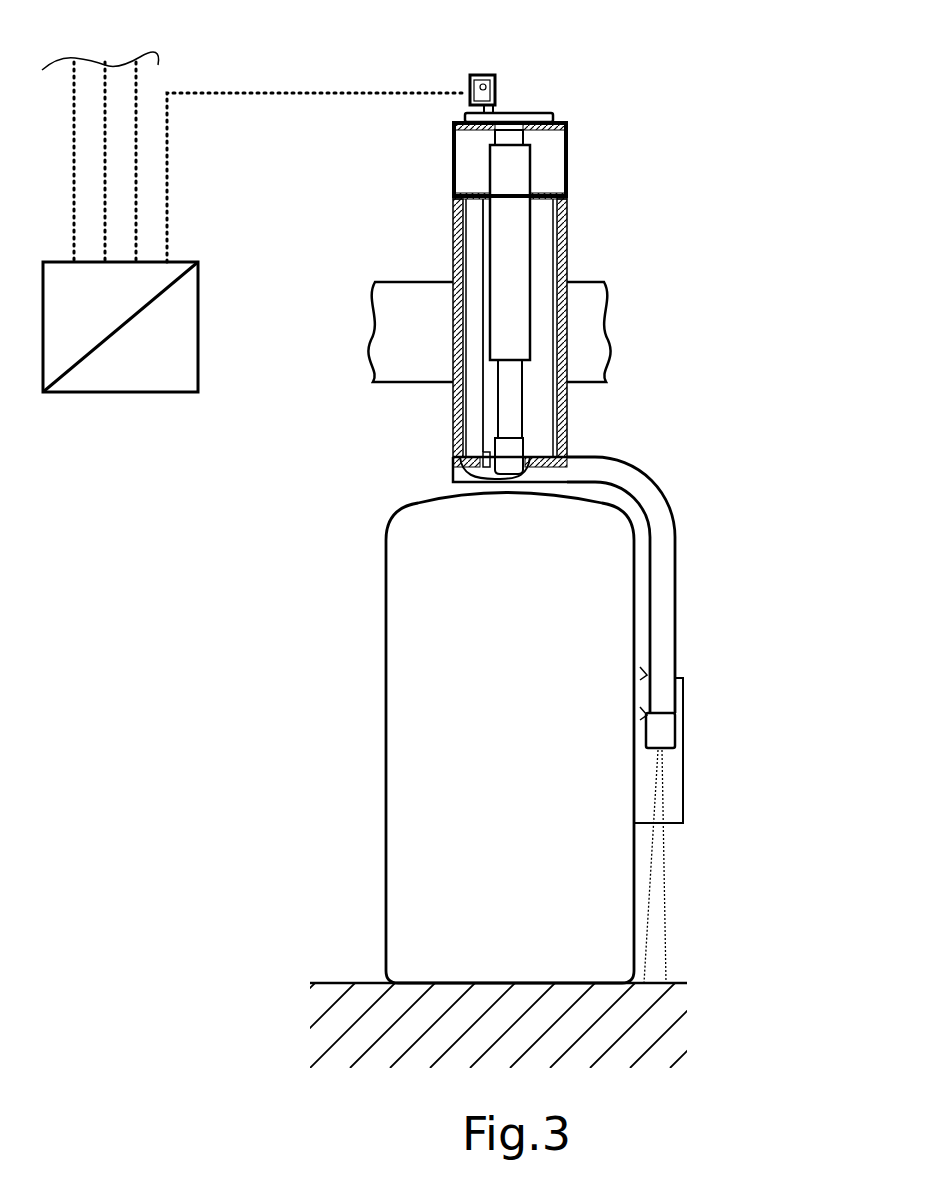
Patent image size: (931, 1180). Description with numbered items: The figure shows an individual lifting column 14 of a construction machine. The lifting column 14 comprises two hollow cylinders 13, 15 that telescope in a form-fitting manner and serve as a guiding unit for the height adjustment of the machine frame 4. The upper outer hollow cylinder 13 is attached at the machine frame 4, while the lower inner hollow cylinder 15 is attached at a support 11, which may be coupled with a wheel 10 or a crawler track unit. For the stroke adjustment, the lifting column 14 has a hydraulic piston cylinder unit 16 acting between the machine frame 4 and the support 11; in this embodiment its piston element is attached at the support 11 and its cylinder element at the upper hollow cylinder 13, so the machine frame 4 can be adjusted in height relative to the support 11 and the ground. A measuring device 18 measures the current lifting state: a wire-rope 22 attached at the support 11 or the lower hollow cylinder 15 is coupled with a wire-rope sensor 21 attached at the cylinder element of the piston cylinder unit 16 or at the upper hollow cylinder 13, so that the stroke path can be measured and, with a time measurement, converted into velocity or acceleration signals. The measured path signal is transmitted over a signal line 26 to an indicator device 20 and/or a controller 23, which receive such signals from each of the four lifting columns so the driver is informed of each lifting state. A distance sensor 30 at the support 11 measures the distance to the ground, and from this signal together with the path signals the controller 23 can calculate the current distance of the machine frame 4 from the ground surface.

The machine frame 4 is at (580, 310).
The wheel 10 is at (492, 694).
The support 11 is at (663, 594).
The upper outer hollow cylinder 13 is at (567, 358).
The lifting column 14 is at (614, 202).
The lower inner hollow cylinder 15 is at (563, 413).
The hydraulic piston cylinder unit 16 is at (507, 260).
The measuring device 18 is at (450, 69).
The indicator device 20 is at (120, 222).
The wire-rope sensor 21 is at (495, 98).
The wire-rope 22 is at (480, 407).
The controller 23 is at (120, 327).
The signal line 26 is at (238, 93).
The distance sensor 30 is at (662, 730).